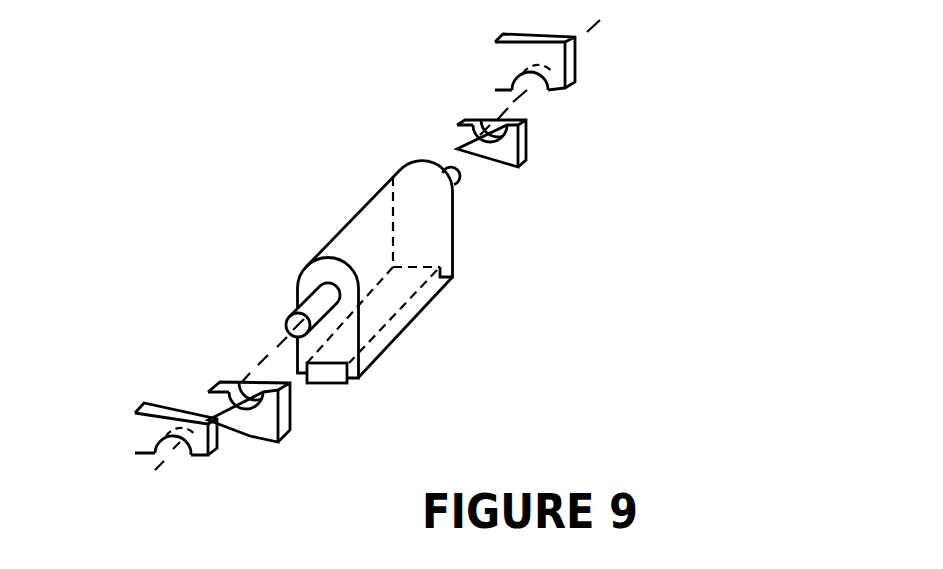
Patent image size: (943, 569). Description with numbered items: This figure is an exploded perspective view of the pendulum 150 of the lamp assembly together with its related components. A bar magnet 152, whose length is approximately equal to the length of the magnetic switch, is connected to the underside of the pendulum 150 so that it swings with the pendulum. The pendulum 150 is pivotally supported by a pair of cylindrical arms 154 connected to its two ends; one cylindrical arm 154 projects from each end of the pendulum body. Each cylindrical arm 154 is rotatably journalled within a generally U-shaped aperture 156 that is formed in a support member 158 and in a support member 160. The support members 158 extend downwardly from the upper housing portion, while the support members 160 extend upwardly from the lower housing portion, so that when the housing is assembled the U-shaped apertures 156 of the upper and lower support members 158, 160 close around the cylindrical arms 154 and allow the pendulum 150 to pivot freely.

The pendulum 150 is at (352, 217).
The bar magnet 152 is at (312, 388).
The cylindrical arm 154 is at (313, 309).
The U-shaped aperture 156 is at (543, 82).
The support member 158 is at (575, 63).
The support member 160 is at (530, 147).